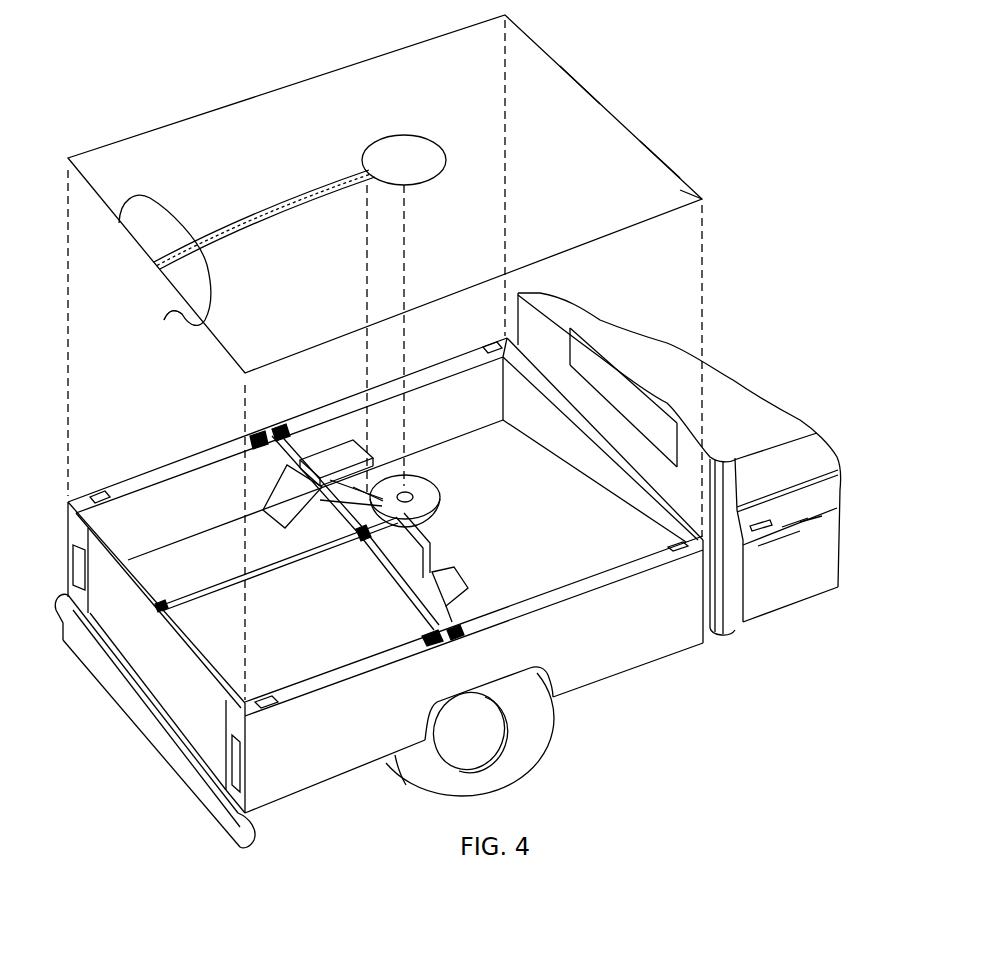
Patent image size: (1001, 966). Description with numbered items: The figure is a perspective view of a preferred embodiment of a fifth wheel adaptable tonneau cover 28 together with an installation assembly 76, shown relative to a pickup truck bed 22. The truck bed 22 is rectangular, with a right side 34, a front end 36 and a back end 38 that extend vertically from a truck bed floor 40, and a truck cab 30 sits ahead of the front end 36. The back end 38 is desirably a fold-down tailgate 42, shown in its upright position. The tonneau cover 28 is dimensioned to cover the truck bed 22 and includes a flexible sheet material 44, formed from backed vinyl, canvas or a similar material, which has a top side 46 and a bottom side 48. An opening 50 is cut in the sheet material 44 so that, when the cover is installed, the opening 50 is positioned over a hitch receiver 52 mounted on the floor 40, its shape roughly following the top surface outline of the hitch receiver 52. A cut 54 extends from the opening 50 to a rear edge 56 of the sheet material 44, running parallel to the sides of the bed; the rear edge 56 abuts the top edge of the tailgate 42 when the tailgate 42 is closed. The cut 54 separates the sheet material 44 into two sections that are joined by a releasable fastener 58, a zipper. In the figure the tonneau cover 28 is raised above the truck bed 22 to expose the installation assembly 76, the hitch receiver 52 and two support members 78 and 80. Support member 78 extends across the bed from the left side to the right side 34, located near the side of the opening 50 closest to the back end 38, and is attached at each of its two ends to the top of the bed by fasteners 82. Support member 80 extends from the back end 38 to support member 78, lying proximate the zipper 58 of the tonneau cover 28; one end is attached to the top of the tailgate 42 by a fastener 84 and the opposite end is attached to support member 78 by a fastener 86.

The truck bed 22 is at (315, 758).
The tonneau cover 28 is at (385, 357).
The truck cab 30 is at (750, 420).
The right side 34 is at (580, 583).
The front end 36 is at (612, 500).
The back end 38 is at (132, 563).
The truck bed floor 40 is at (570, 540).
The tailgate 42 is at (207, 727).
The sheet material 44 is at (672, 167).
The top side 46 is at (607, 148).
The bottom side 48 is at (702, 235).
The opening 50 is at (378, 148).
The hitch receiver 52 is at (421, 492).
The cut 54 is at (119, 223).
The rear edge 56 is at (172, 287).
The releasable fastener 58 is at (164, 320).
The installation assembly 76 is at (355, 551).
The support member 78 is at (423, 528).
The support member 80 is at (287, 548).
The fasteners 82 is at (258, 440).
The fastener 84 is at (158, 608).
The fastener 86 is at (358, 520).